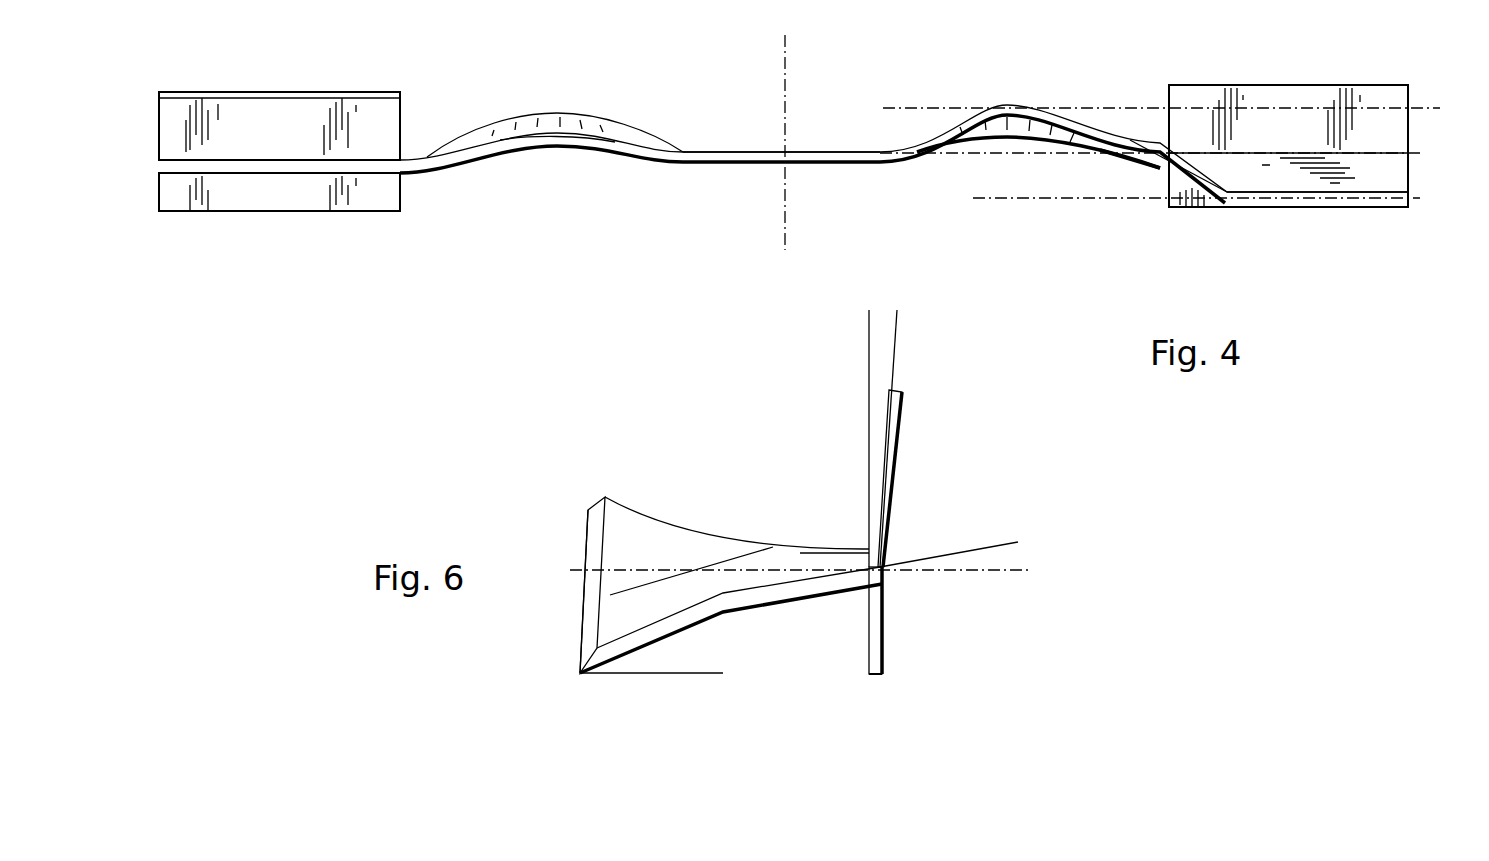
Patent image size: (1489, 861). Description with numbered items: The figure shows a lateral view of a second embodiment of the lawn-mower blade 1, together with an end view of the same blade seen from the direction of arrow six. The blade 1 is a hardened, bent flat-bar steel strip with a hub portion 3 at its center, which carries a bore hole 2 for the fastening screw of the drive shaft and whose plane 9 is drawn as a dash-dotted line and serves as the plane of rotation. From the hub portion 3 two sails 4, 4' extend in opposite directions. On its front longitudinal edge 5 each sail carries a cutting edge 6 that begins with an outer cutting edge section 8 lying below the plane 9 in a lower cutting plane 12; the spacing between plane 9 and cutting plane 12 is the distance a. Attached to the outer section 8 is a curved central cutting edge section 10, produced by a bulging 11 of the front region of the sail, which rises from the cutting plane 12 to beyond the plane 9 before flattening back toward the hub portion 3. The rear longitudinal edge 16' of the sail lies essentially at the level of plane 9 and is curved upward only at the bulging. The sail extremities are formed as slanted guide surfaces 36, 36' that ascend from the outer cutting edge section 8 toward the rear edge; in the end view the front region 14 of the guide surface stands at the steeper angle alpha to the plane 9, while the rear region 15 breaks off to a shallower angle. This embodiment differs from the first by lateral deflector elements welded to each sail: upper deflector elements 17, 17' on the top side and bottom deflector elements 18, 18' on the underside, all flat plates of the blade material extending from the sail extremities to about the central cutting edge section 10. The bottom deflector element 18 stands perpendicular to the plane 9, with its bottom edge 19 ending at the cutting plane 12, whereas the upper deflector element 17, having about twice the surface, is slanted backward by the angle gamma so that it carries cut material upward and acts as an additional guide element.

In FIG. 4, the blade 1 is at (672, 100).
In FIG. 4, the bore hole 2 is at (780, 165).
In FIG. 4, the hub portion 3 is at (740, 152).
In FIG. 4, the blade sail 4 is at (1178, 104).
In FIG. 4, the blade sail 4' is at (555, 85).
In FIG. 4, the front longitudinal edge 5 is at (1176, 213).
In FIG. 4, the cutting edge 6 is at (1145, 168).
In FIG. 4, the outer cutting edge section 8 is at (1273, 197).
In FIG. 4, the plane of the hub portion 9 is at (930, 155).
In FIG. 6, the plane of the hub portion 9 is at (949, 586).
In FIG. 4, the central cutting edge section 10 is at (1070, 120).
In FIG. 4, the bulging 11 is at (1007, 103).
In FIG. 4, the cutting plane 12 is at (1070, 198).
In FIG. 6, the cutting plane 12 is at (712, 678).
In FIG. 6, the front region of the guide surface 14 is at (627, 617).
In FIG. 6, the rear region of the guide surface 15 is at (803, 575).
In FIG. 4, the rear longitudinal edge 16' is at (557, 178).
In FIG. 4, the upper deflector element 17 is at (1288, 110).
In FIG. 6, the upper deflector element 17 is at (915, 438).
In FIG. 4, the upper deflector element 17' is at (279, 86).
In FIG. 4, the bottom deflector element 18 is at (1208, 236).
In FIG. 6, the bottom deflector element 18 is at (915, 630).
In FIG. 4, the bottom deflector element 18' is at (279, 239).
In FIG. 6, the bottom edge 19 is at (876, 678).
In FIG. 4, the slanted guide surface 36 is at (1392, 76).
In FIG. 6, the slanted guide surface 36 is at (691, 533).
In FIG. 4, the slanted guide surface 36' is at (279, 232).